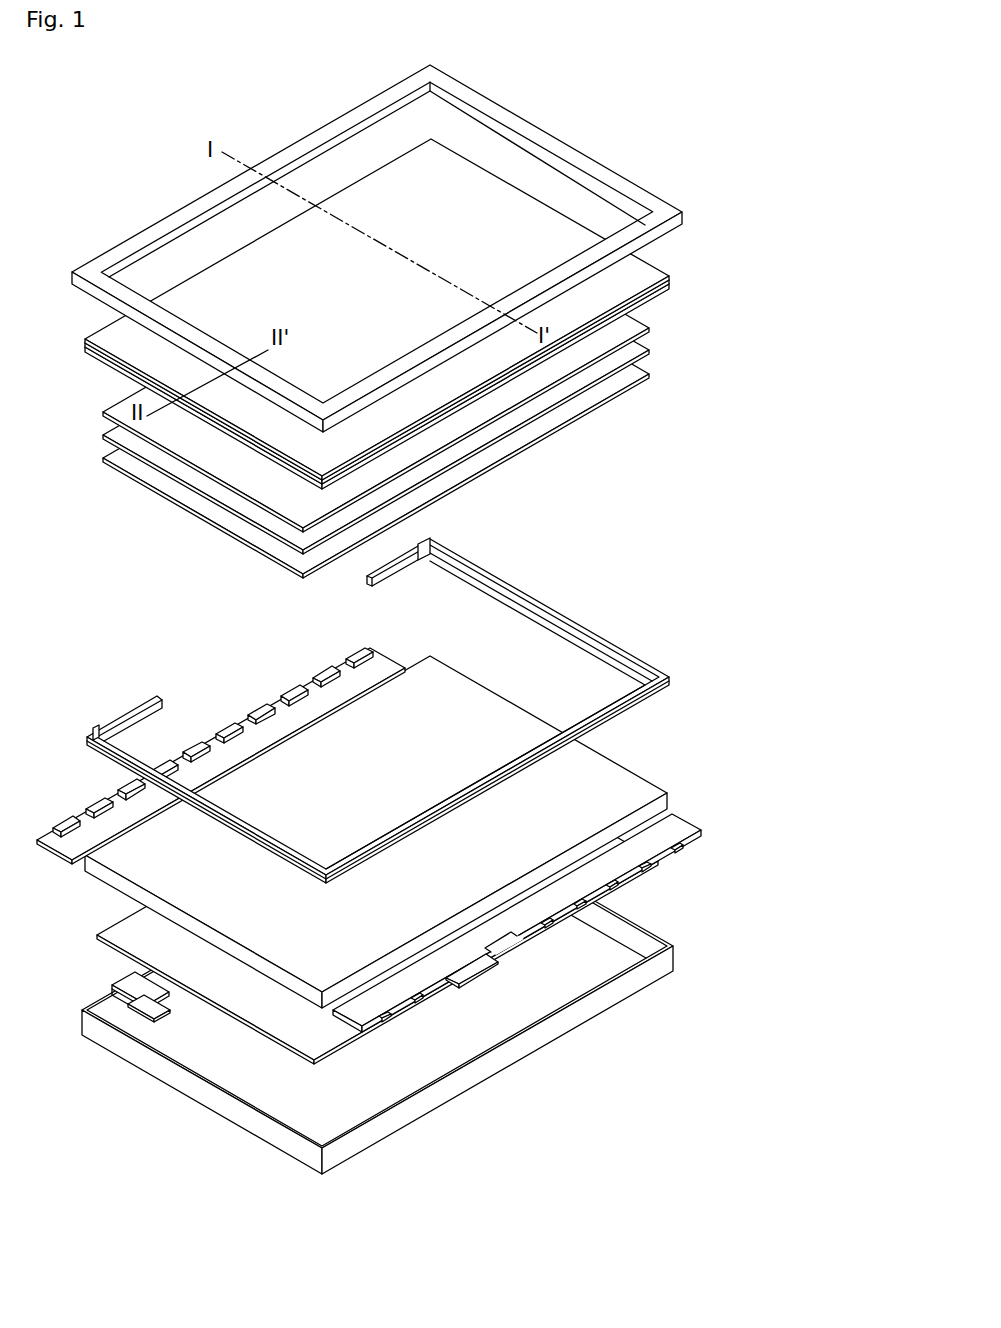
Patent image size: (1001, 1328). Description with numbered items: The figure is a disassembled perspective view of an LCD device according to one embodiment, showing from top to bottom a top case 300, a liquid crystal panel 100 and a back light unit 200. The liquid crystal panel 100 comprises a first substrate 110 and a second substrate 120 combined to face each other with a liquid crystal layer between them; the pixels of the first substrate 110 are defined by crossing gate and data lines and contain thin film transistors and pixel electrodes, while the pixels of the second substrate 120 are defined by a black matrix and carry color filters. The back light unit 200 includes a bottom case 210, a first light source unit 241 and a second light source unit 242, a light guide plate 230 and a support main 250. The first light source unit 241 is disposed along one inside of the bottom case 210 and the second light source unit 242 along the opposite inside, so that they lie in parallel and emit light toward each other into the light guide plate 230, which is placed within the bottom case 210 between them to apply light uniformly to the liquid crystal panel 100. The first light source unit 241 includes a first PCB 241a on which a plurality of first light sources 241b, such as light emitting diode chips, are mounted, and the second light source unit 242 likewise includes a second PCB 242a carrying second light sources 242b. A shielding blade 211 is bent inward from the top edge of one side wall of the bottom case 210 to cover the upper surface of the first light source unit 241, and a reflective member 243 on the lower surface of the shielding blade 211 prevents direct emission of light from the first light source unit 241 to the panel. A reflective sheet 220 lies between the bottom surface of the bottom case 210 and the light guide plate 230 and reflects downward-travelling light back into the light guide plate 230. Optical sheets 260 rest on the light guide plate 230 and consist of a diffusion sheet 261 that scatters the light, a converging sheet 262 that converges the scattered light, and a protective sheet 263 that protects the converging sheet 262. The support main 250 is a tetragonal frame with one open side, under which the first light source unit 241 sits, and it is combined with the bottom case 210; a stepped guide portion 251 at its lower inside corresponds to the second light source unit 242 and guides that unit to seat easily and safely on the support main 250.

The liquid crystal panel 100 is at (430, 314).
The first substrate 110 is at (648, 288).
The second substrate 120 is at (647, 271).
The back light unit 200 is at (453, 693).
The bottom case 210 is at (358, 991).
The shielding blade 211 is at (106, 1010).
The reflective sheet 220 is at (121, 928).
The light guide plate 230 is at (672, 803).
The first light source unit 241 is at (221, 742).
The first PCB 241a is at (172, 687).
The first light sources 241b is at (222, 731).
The second light source unit 242 is at (517, 965).
The second PCB 242a is at (507, 937).
The second light sources 242b is at (453, 988).
The reflective member 243 is at (148, 1005).
The support main 250 is at (378, 707).
The stepped guide portion 251 is at (607, 690).
The optical sheets 260 is at (370, 406).
The diffusion sheet 261 is at (244, 528).
The converging sheet 262 is at (207, 485).
The protective sheet 263 is at (373, 372).
The top case 300 is at (603, 172).